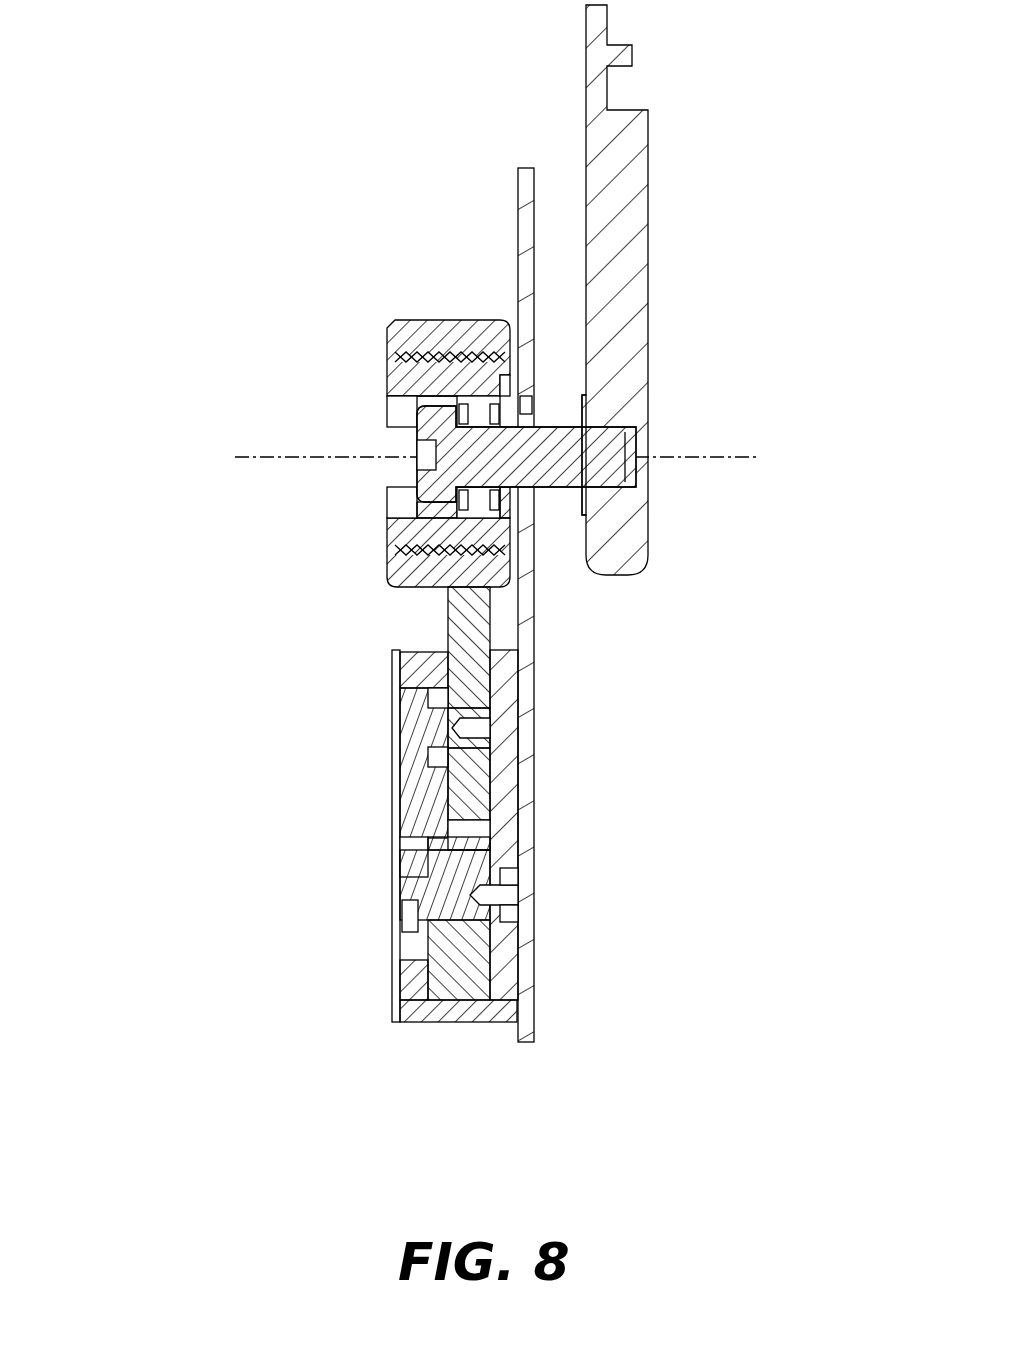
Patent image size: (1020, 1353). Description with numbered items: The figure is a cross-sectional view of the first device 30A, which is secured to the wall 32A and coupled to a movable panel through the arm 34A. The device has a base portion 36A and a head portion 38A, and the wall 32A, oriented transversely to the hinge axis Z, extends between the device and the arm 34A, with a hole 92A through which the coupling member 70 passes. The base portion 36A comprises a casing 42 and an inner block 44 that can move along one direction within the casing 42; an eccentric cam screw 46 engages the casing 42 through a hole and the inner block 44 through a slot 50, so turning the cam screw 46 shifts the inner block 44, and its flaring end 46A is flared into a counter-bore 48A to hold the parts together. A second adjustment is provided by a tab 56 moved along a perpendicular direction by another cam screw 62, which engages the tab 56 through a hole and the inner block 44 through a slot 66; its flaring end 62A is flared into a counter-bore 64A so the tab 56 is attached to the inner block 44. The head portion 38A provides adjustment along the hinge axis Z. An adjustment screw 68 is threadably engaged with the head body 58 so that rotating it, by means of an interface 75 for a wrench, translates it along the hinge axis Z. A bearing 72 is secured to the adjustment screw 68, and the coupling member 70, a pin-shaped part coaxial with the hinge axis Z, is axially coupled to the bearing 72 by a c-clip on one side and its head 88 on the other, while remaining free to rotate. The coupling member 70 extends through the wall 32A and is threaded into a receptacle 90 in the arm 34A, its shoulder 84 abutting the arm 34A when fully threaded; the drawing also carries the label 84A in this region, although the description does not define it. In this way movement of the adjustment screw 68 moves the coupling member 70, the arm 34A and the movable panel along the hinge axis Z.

The first device 30A is at (255, 152).
The wall 32A is at (525, 215).
The arm 34A is at (620, 205).
The base portion 36A is at (205, 754).
The head portion 38A is at (188, 368).
The casing 42 is at (445, 1010).
The inner block 44 is at (428, 990).
The cam screw 46 is at (418, 935).
The flaring end 46A is at (490, 905).
The counter-bore 48A is at (500, 883).
The slot 50 is at (412, 857).
The tab 56 is at (465, 645).
The head body 58 is at (404, 310).
The cam screw 62 is at (412, 720).
The flaring end 62A is at (488, 745).
The counter-bore 64A is at (495, 760).
The slot 66 is at (405, 795).
The adjustment screw 68 is at (412, 372).
The coupling member 70 is at (580, 410).
The bearing 72 is at (447, 507).
The interface 75 is at (408, 525).
The shoulder 84 is at (555, 507).
The bolt 84A is at (428, 445).
The head 88 is at (410, 405).
The receptacle 90 is at (615, 437).
The hole 92A is at (534, 406).
The hinge axis Z is at (730, 440).